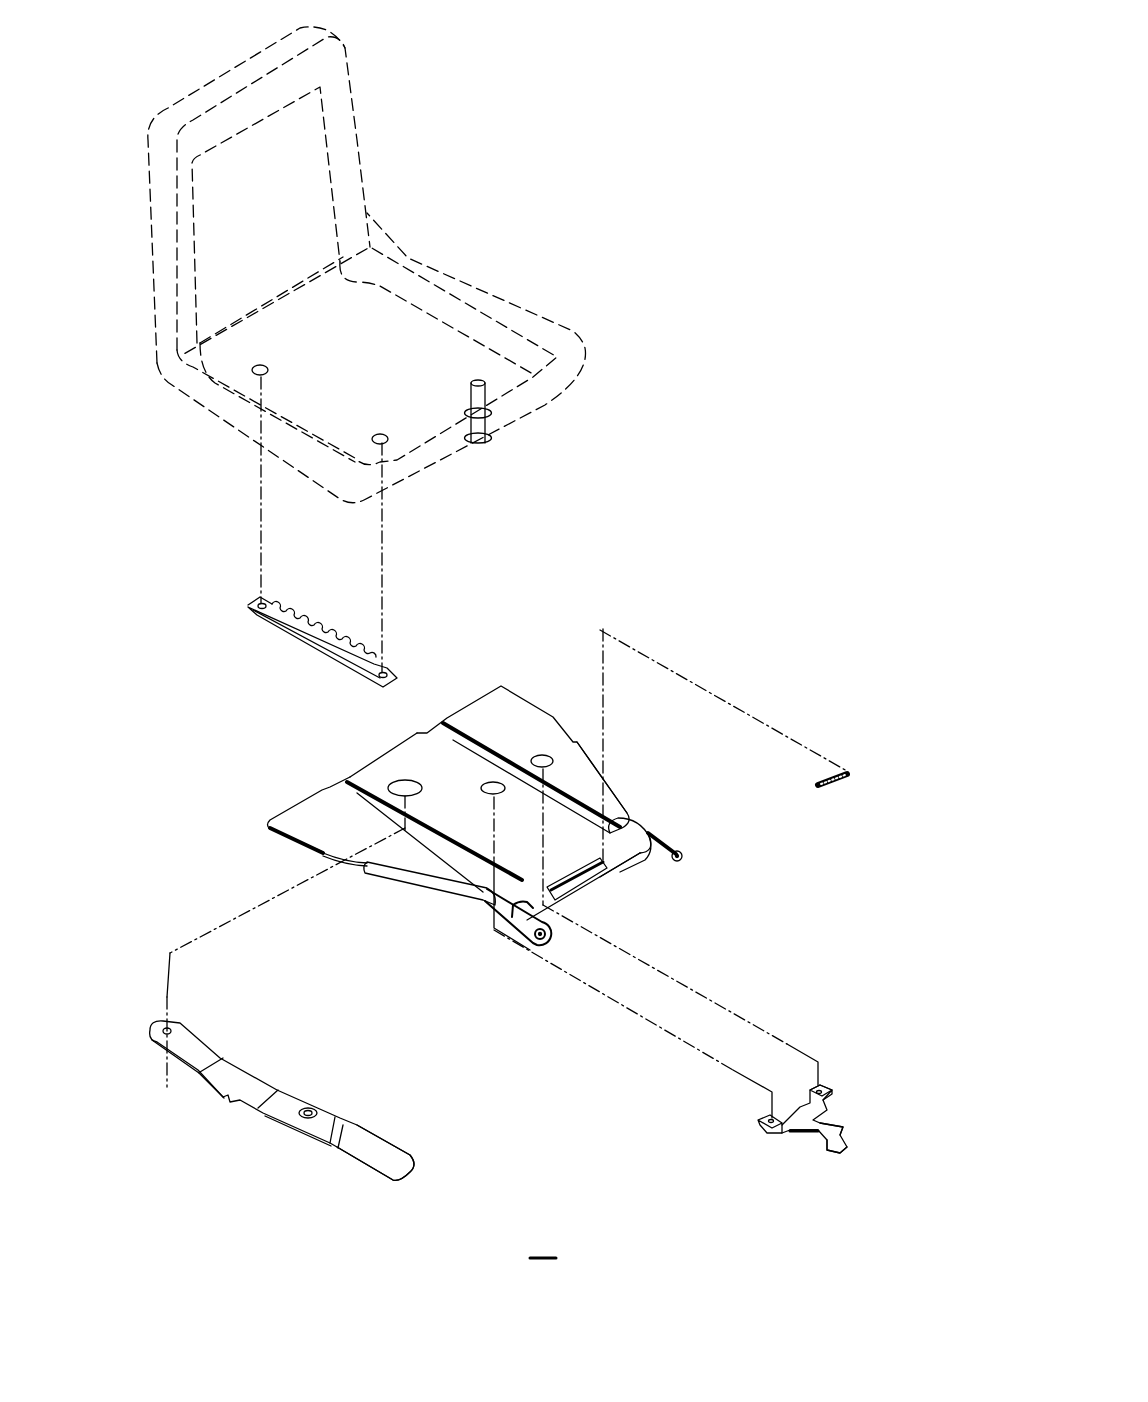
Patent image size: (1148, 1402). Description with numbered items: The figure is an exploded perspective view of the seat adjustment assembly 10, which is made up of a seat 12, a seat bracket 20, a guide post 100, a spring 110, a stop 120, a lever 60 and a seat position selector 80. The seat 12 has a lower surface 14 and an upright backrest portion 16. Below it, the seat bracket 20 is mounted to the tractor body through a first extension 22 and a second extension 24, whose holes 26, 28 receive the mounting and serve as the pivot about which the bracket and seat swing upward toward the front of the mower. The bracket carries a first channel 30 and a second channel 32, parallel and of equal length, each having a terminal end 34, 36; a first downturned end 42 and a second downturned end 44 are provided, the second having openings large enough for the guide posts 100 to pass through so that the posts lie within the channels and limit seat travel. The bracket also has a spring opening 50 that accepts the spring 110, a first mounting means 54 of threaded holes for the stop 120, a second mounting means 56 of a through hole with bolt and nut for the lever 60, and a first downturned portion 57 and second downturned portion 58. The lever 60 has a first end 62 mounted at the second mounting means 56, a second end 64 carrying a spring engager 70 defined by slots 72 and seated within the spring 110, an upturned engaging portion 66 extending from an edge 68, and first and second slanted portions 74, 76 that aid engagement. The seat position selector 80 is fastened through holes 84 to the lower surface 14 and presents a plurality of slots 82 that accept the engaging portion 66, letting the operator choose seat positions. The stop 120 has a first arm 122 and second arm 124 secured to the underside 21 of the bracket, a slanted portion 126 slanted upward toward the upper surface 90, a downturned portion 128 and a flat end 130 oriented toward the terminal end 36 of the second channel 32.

The seat adjustment assembly 10 is at (714, 508).
The seat 12 is at (398, 243).
The lower surface 14 is at (537, 417).
The upright backrest portion 16 is at (320, 160).
The seat bracket 20 is at (612, 745).
The underside 21 is at (284, 848).
The first extension 22 is at (683, 862).
The second extension 24 is at (528, 932).
The hole 26 is at (684, 858).
The hole 28 is at (540, 944).
The first channel 30 is at (345, 775).
The second channel 32 is at (453, 737).
The terminal end 34 is at (583, 885).
The terminal end 36 is at (637, 826).
The first downturned end 42 is at (630, 871).
The second downturned end 44 is at (270, 824).
The spring opening 50 is at (627, 870).
The first mounting means 54 is at (494, 782).
The second mounting means 56 is at (405, 780).
The first downturned portion 57 is at (595, 771).
The second downturned portion 58 is at (418, 878).
The lever 60 is at (158, 1019).
The first end 62 is at (150, 1037).
The second end 64 is at (377, 1153).
The engaging portion 66 is at (230, 1100).
The edge 68 is at (263, 1112).
The spring engager 70 is at (343, 1118).
The slots 72 is at (333, 1117).
The first slanted portion 74 is at (277, 1100).
The second slanted portion 76 is at (203, 1055).
The seat position selector 80 is at (230, 602).
The slots 82 is at (305, 625).
The holes 84 is at (257, 603).
The upper surface 90 is at (312, 827).
The guide post 100 is at (487, 440).
The spring 110 is at (843, 786).
The stop 120 is at (743, 1129).
The first arm 122 is at (770, 1134).
The second arm 124 is at (823, 1093).
The slanted portion 126 is at (800, 1135).
The downturned portion 128 is at (838, 1134).
The flat end 130 is at (845, 1150).